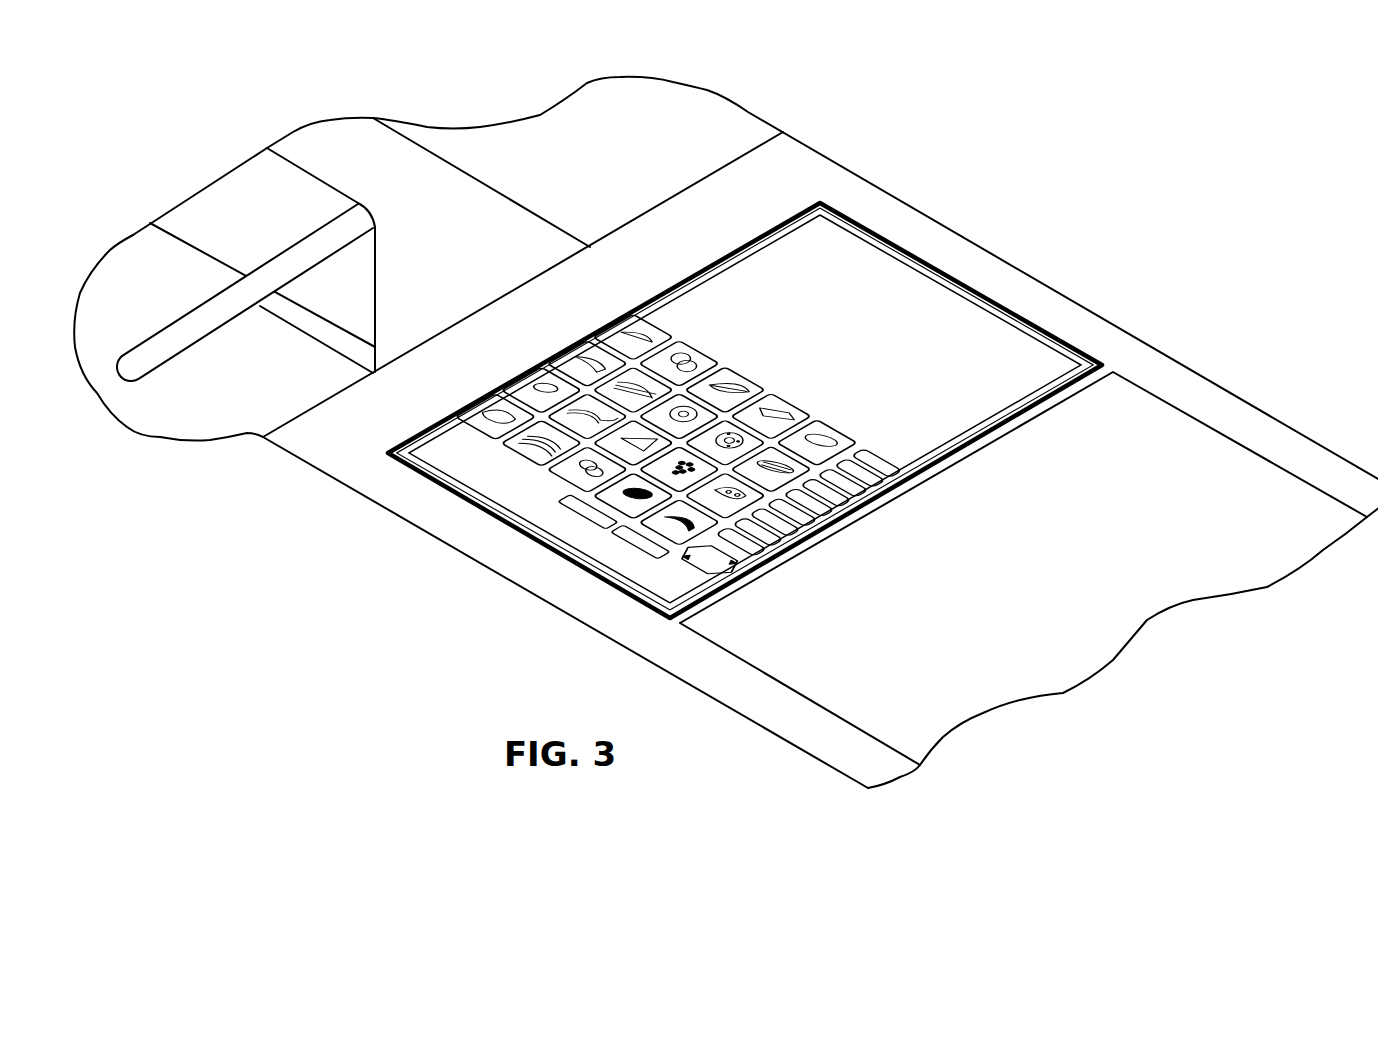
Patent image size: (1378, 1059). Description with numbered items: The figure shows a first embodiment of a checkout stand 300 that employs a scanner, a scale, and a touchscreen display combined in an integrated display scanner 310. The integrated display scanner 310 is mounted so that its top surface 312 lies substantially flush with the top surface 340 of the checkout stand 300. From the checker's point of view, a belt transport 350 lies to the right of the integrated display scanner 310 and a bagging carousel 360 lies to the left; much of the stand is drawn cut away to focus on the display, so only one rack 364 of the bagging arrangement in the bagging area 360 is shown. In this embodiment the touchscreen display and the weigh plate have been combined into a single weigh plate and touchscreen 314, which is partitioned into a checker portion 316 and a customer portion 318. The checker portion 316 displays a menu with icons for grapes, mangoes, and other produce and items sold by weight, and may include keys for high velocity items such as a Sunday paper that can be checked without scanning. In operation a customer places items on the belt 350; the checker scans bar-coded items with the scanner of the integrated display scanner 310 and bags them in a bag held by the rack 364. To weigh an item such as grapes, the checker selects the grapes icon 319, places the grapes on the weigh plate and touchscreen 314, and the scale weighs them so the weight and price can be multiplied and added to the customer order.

The checkout stand 300 is at (1165, 92).
The integrated display scanner 310 is at (1075, 353).
The top surface 312 is at (745, 406).
The weigh plate and touchscreen 314 is at (656, 429).
The checker portion 316 is at (658, 320).
The customer portion 318 is at (862, 340).
The grapes icon 319 is at (764, 394).
The top surface 340 is at (798, 170).
The belt transport 350 is at (1167, 483).
The bagging carousel 360 is at (318, 134).
The rack 364 is at (157, 343).